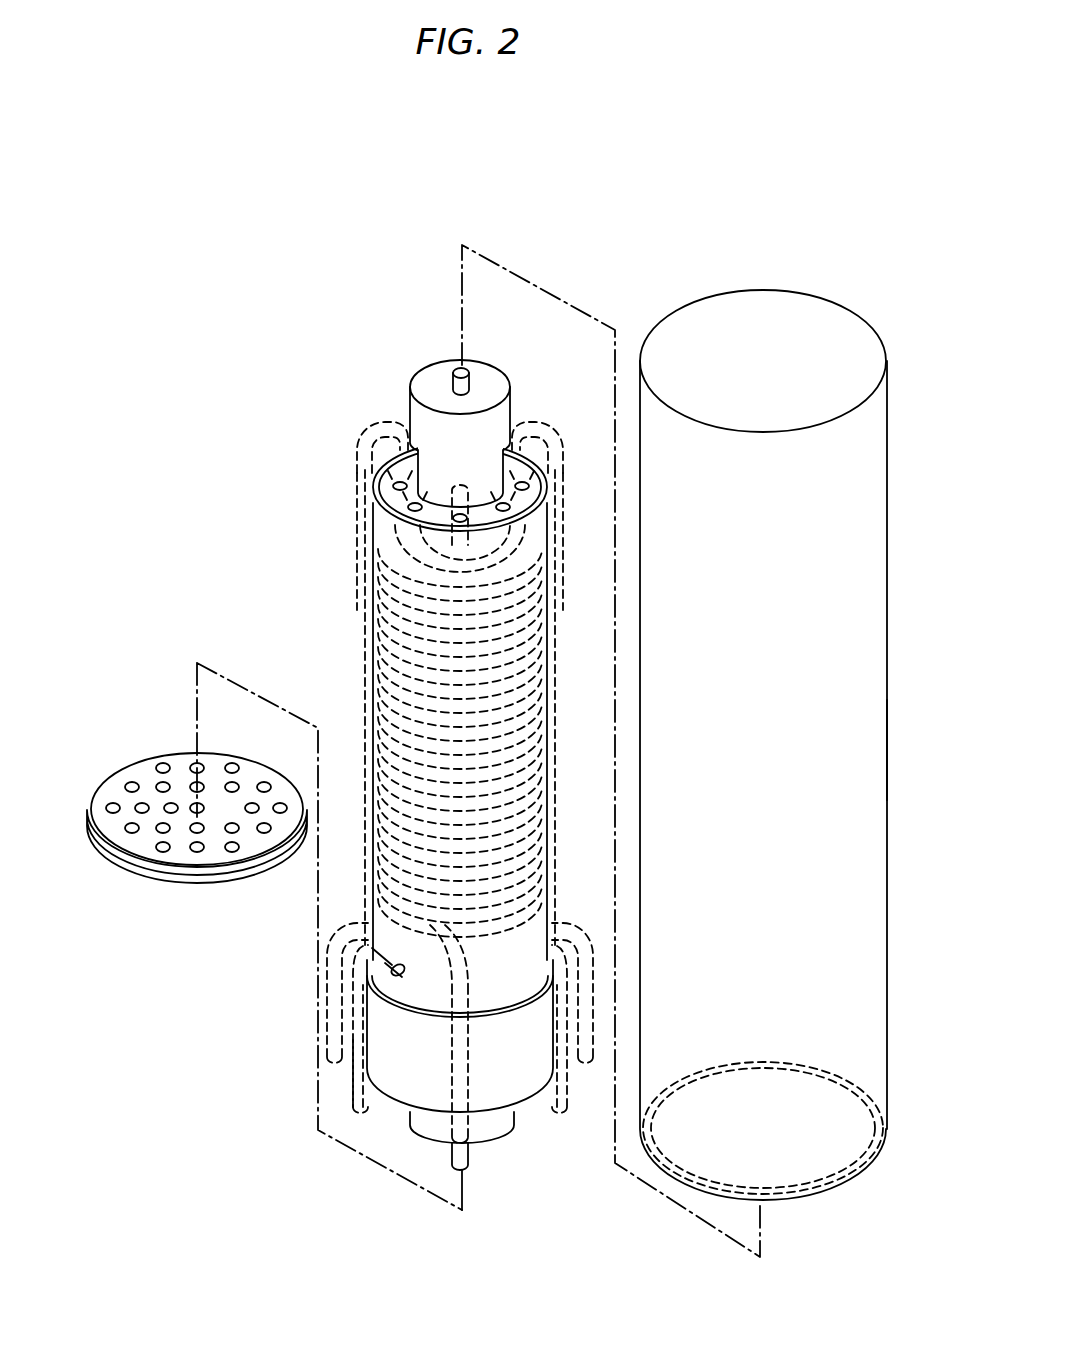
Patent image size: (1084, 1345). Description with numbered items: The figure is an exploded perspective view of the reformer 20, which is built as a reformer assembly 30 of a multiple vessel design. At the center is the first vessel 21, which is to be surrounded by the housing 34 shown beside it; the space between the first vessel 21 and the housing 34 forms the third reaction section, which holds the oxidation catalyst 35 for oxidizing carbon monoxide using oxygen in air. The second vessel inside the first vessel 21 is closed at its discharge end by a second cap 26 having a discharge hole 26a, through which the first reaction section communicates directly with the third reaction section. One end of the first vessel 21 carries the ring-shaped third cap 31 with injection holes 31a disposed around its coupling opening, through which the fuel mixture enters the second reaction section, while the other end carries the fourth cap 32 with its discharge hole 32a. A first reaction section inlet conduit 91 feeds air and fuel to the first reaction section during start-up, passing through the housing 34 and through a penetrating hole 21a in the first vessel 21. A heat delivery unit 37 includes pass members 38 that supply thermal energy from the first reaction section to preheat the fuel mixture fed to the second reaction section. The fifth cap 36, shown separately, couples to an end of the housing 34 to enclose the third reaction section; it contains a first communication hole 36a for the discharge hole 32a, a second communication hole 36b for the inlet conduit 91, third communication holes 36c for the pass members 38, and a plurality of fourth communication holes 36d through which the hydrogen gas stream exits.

The reformer 20 is at (519, 170).
The first vessel 21 is at (427, 738).
The penetrating hole 21a is at (392, 966).
The second cap 26 is at (487, 394).
The discharge hole 26a is at (470, 378).
The reformer assembly 30 is at (871, 283).
The third cap 31 is at (459, 520).
The injection holes 31a is at (520, 530).
The fourth cap 32 is at (470, 1096).
The discharge hole 32a is at (463, 1163).
The housing 34 is at (888, 747).
The oxidation catalyst 35 is at (368, 656).
The fifth cap 36 is at (175, 770).
The first communication hole 36a is at (197, 812).
The second communication hole 36b is at (171, 812).
The third communication holes 36c is at (142, 812).
The fourth communication holes 36d is at (281, 806).
The heat delivery unit 37 is at (350, 541).
The pass members 38 is at (360, 518).
The first reaction section inlet conduit 91 is at (352, 1075).